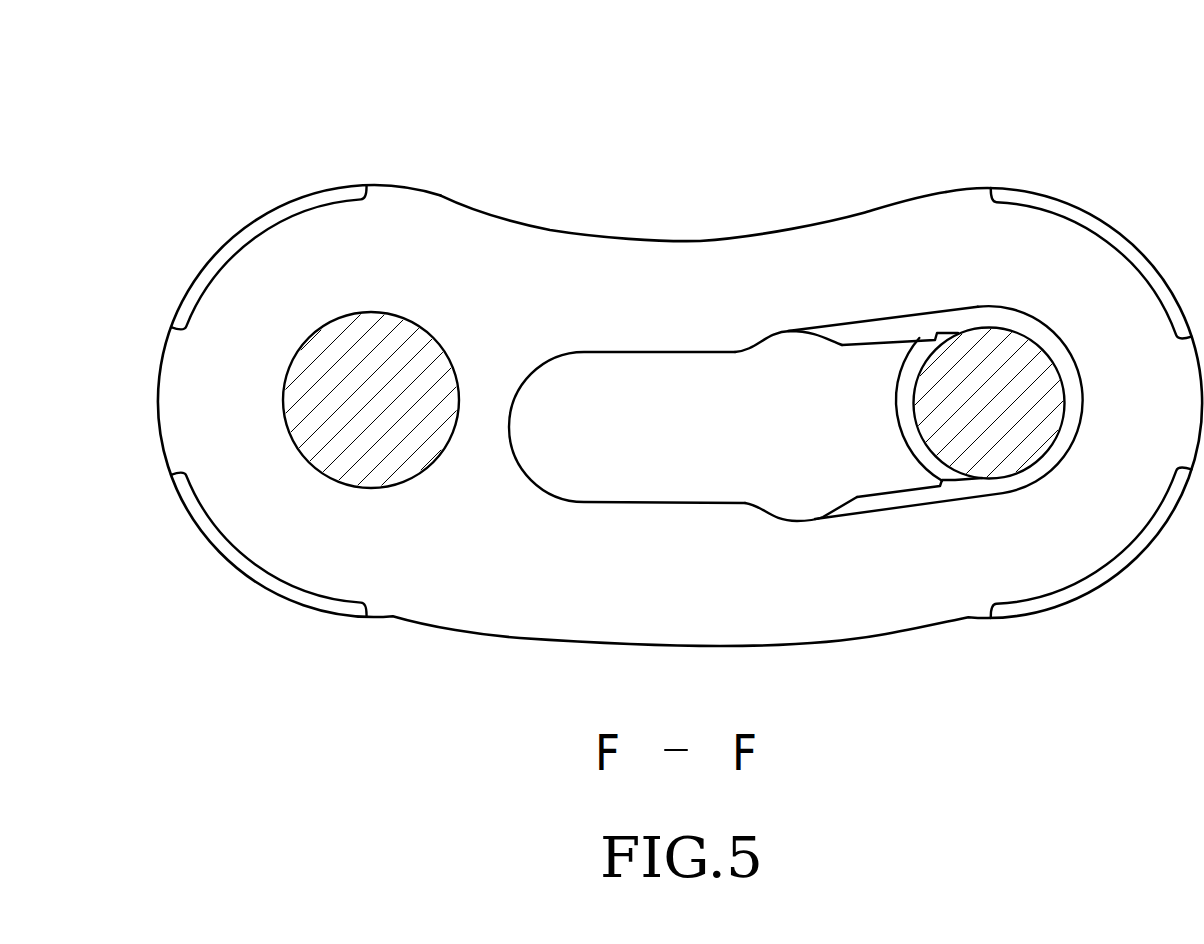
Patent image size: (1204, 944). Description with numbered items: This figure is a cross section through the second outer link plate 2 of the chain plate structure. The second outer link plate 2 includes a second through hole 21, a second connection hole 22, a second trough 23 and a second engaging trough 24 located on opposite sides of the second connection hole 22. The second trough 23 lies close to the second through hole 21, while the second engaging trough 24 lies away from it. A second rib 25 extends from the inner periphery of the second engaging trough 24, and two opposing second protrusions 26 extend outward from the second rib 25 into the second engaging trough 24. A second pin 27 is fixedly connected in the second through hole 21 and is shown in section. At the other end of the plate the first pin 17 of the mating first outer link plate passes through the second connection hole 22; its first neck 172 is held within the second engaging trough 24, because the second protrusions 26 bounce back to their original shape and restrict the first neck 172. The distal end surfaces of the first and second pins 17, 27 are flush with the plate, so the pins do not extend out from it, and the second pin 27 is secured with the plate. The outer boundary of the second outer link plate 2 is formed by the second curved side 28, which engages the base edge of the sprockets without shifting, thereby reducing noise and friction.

The second outer link plate 2 is at (612, 562).
The first pin 17 is at (933, 468).
The second through hole 21 is at (293, 357).
The second connection hole 22 is at (785, 345).
The second trough 23 is at (563, 402).
The second engaging trough 24 is at (888, 345).
The second rib 25 is at (860, 330).
The second protrusions 26 is at (932, 333).
The second pin 27 is at (372, 330).
The second curved side 28 is at (642, 240).
The first neck 172 is at (956, 367).